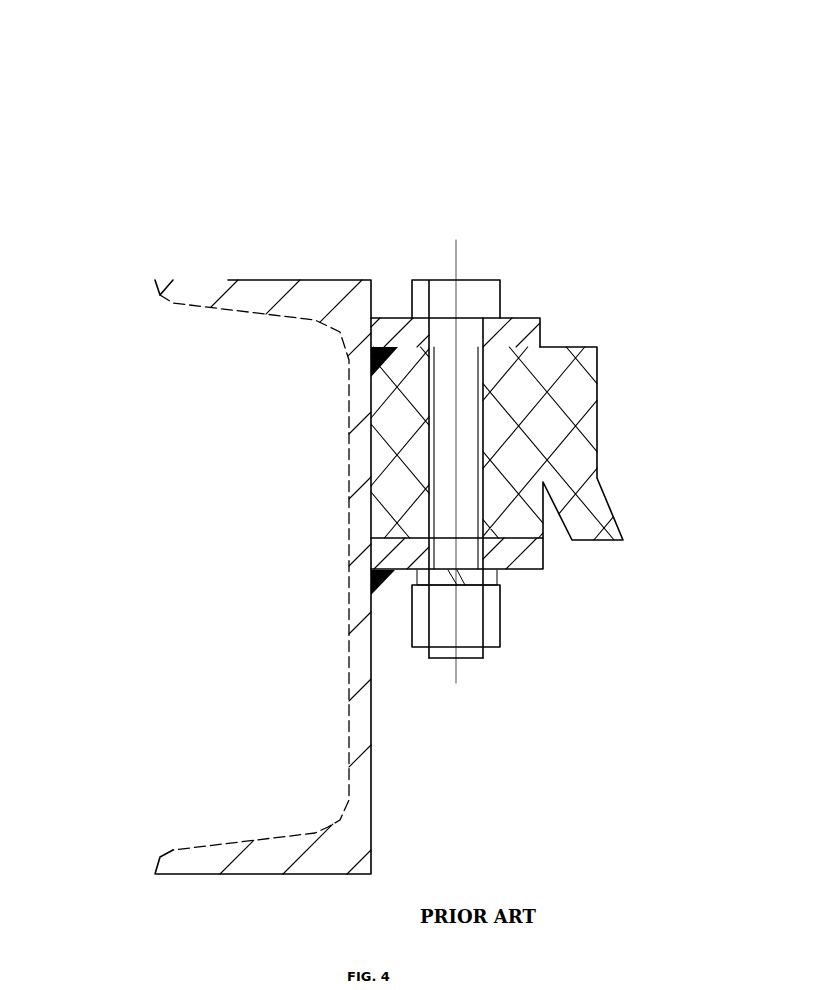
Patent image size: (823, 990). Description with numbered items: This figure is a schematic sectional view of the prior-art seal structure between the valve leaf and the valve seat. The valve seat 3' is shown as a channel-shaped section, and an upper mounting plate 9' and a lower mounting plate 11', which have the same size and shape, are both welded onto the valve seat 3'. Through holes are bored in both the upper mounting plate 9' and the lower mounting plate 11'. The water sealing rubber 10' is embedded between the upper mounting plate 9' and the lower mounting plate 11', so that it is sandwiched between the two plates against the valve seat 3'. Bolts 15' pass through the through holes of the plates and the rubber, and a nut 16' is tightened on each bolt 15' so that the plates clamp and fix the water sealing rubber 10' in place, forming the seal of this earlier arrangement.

The valve seat 3' is at (206, 454).
The upper mounting plate 9' is at (352, 315).
The water sealing rubber 10' is at (589, 356).
The lower mounting plate 11' is at (457, 569).
The bolts 15' is at (514, 359).
The nut 16' is at (553, 695).